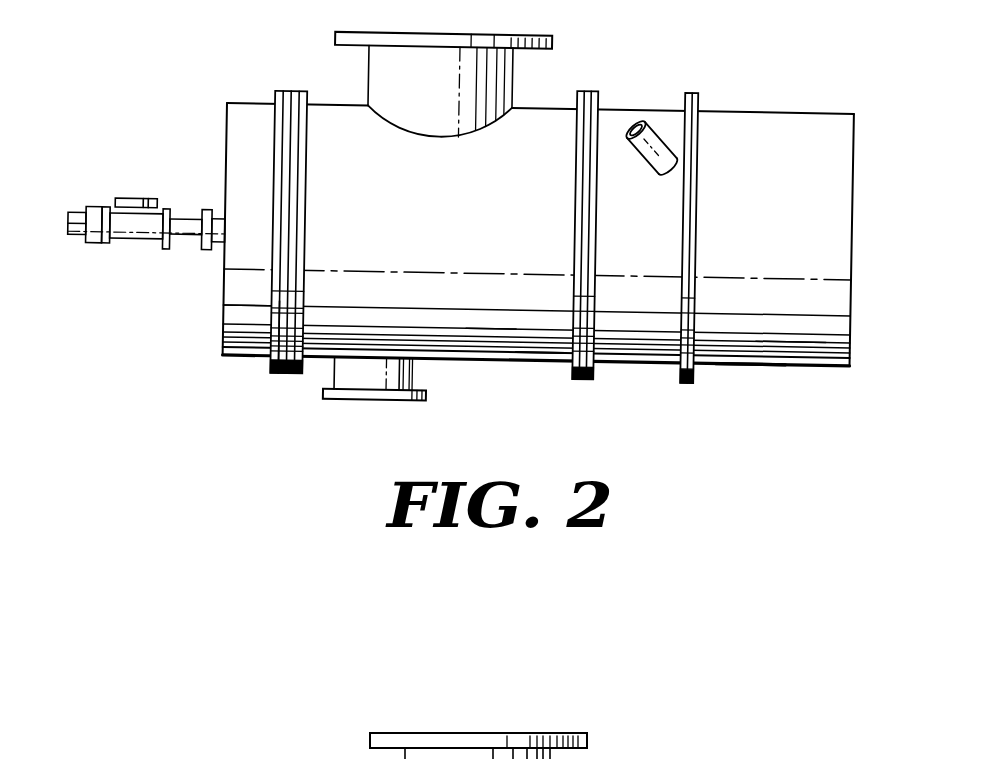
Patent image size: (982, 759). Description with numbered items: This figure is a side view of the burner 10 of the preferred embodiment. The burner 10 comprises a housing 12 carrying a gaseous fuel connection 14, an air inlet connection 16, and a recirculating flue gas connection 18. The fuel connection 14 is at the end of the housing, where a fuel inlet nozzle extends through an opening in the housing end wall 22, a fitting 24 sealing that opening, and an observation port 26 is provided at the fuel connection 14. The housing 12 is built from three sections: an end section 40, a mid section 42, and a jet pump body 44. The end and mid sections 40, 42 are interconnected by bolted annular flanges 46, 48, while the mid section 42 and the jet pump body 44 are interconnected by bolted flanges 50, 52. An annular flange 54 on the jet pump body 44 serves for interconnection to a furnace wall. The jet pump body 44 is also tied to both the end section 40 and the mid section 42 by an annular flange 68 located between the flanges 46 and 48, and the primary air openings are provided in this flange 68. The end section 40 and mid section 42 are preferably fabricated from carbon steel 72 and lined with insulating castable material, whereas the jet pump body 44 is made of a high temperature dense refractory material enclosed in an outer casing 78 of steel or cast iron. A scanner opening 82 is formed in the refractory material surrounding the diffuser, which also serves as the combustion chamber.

The burner 10 is at (192, 60).
The housing 12 is at (595, 53).
The gaseous fuel connection 14 is at (130, 197).
The air inlet connection 16 is at (385, 72).
The recirculating flue gas connection 18 is at (413, 373).
The housing end wall 22 is at (248, 268).
The fitting 24 is at (216, 216).
The observation port 26 is at (68, 222).
The end section 40 is at (252, 313).
The mid section 42 is at (492, 318).
The jet pump body 44 is at (785, 327).
The annular flange 46 is at (267, 365).
The annular flange 48 is at (298, 375).
The bolted flange 50 is at (580, 380).
The bolted flange 52 is at (588, 380).
The annular flange 54 is at (692, 383).
The annular flange 68 is at (288, 375).
The carbon steel 72 is at (542, 363).
The outer casing 78 is at (755, 367).
The scanner opening 82 is at (652, 128).